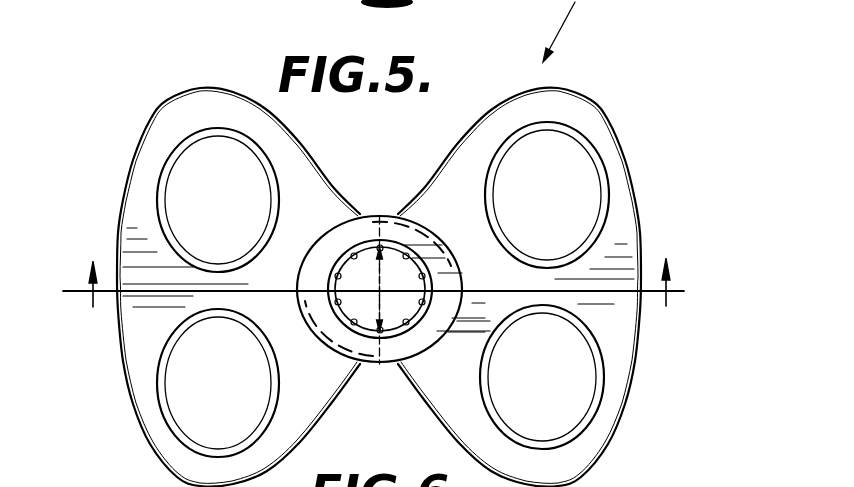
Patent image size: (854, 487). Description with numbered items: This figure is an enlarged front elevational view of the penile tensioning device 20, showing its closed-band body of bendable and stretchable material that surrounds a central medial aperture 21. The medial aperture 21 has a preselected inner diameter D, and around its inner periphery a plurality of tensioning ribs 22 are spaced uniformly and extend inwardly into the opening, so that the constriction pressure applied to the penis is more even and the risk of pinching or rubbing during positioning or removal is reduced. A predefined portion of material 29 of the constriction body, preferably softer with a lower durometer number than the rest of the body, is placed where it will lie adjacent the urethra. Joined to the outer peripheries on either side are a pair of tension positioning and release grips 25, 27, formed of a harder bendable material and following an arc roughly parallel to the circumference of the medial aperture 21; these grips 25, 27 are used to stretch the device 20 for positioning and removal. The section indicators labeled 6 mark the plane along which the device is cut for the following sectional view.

The penile tensioning device 20 is at (638, 480).
The medial aperture 21 is at (380, 216).
The tensioning ribs 22 is at (413, 308).
The tension positioning and release grip 25 is at (172, 127).
The tension positioning and release grip 27 is at (612, 140).
The predefined portion of material 29 is at (380, 364).
The section line 6- 6 is at (379, 296).
The inner diameter D is at (374, 266).